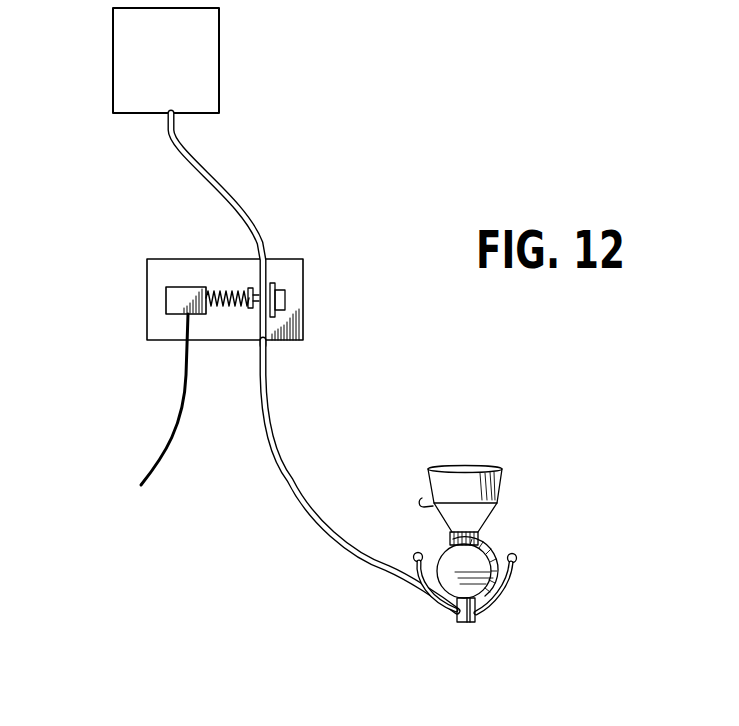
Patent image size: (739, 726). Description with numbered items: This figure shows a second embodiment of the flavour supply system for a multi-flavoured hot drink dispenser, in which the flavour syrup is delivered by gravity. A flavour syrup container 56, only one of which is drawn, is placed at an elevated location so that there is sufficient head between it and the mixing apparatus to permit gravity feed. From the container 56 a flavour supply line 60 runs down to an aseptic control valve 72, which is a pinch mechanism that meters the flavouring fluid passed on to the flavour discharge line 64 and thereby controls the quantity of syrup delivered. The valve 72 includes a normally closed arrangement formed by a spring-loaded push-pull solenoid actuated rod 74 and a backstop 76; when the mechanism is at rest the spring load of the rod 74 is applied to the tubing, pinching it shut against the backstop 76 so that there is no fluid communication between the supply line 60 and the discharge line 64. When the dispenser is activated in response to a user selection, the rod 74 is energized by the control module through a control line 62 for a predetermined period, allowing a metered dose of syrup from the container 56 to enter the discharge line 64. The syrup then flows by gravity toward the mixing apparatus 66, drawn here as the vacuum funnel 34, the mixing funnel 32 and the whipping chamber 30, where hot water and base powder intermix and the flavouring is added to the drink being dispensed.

The flavour syrup container 56 is at (213, 22).
The flavour supply line 60 is at (207, 167).
The aseptic control valve 72 is at (322, 300).
The solenoid actuated rod 74 is at (183, 289).
The backstop 76 is at (277, 286).
The control line 62 is at (178, 398).
The flavour discharge line 64 is at (290, 480).
The vacuum funnel 34 is at (461, 482).
The mixing funnel 32 is at (463, 525).
The mixing apparatus 66 is at (463, 625).
The whipping chamber 30 is at (487, 577).